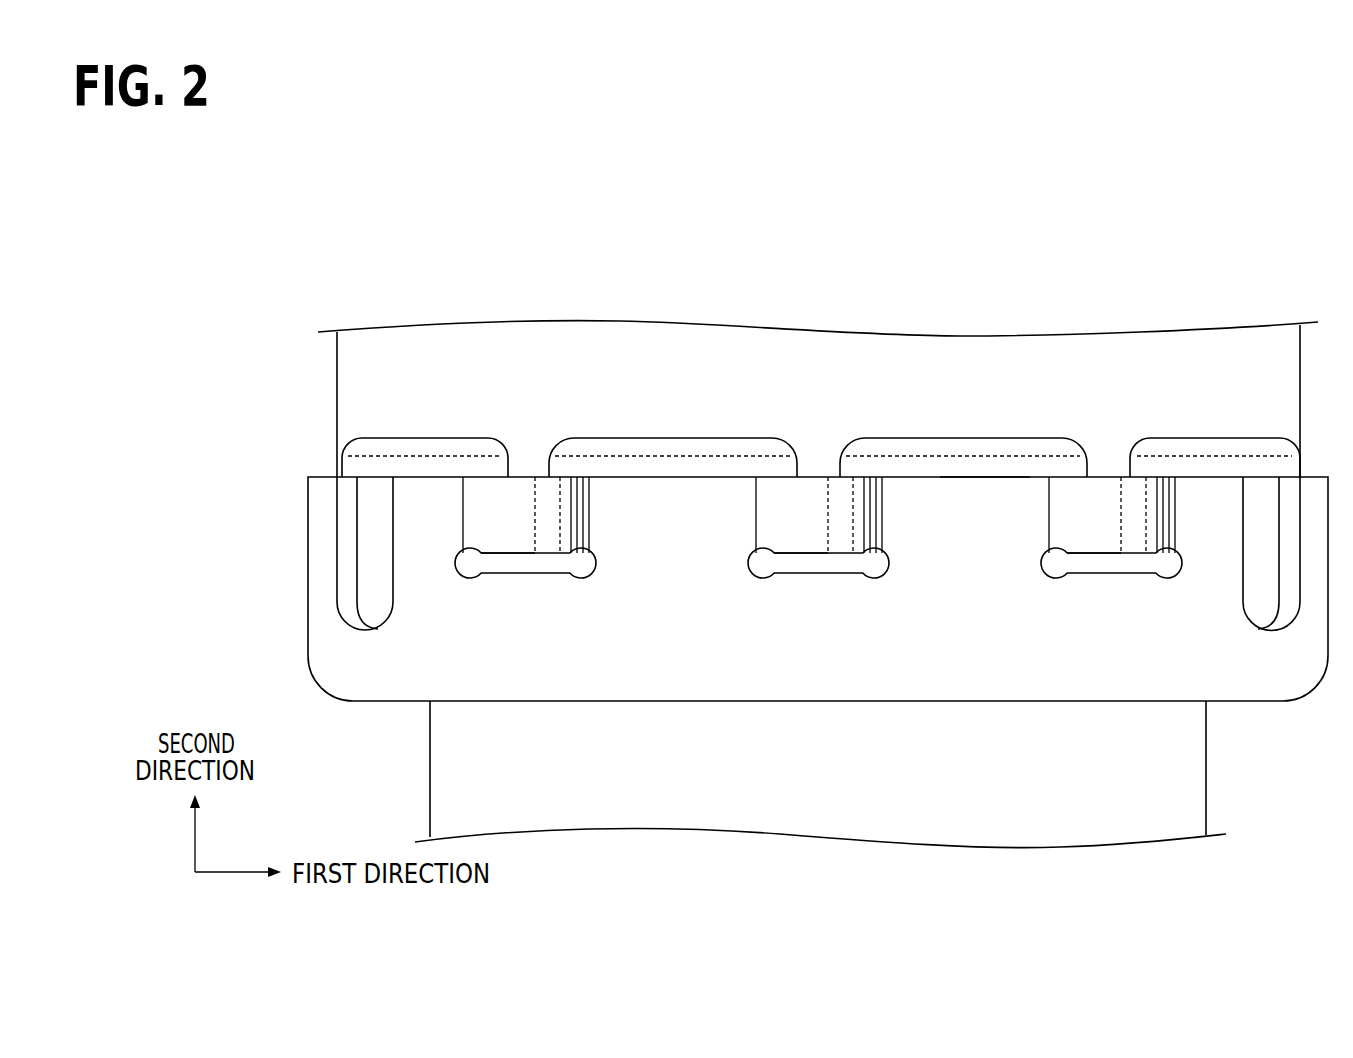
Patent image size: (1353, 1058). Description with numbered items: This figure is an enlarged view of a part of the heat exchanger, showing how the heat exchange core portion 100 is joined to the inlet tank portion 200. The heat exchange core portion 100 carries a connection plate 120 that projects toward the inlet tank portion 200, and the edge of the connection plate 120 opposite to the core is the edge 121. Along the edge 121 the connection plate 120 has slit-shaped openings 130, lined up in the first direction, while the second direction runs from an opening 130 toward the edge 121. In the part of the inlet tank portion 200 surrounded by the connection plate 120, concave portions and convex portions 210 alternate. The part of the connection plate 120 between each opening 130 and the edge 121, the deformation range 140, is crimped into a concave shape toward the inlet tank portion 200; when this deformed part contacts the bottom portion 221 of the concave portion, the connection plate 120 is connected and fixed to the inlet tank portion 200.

The heat exchange core portion 100 is at (430, 737).
The connection plate 120 is at (308, 607).
The edge 121 is at (983, 462).
The opening 130 is at (545, 562).
The deformation range 140 is at (525, 500).
The inlet tank portion 200 is at (337, 413).
The convex portion 210 is at (395, 465).
The bottom portion 221 is at (500, 553).